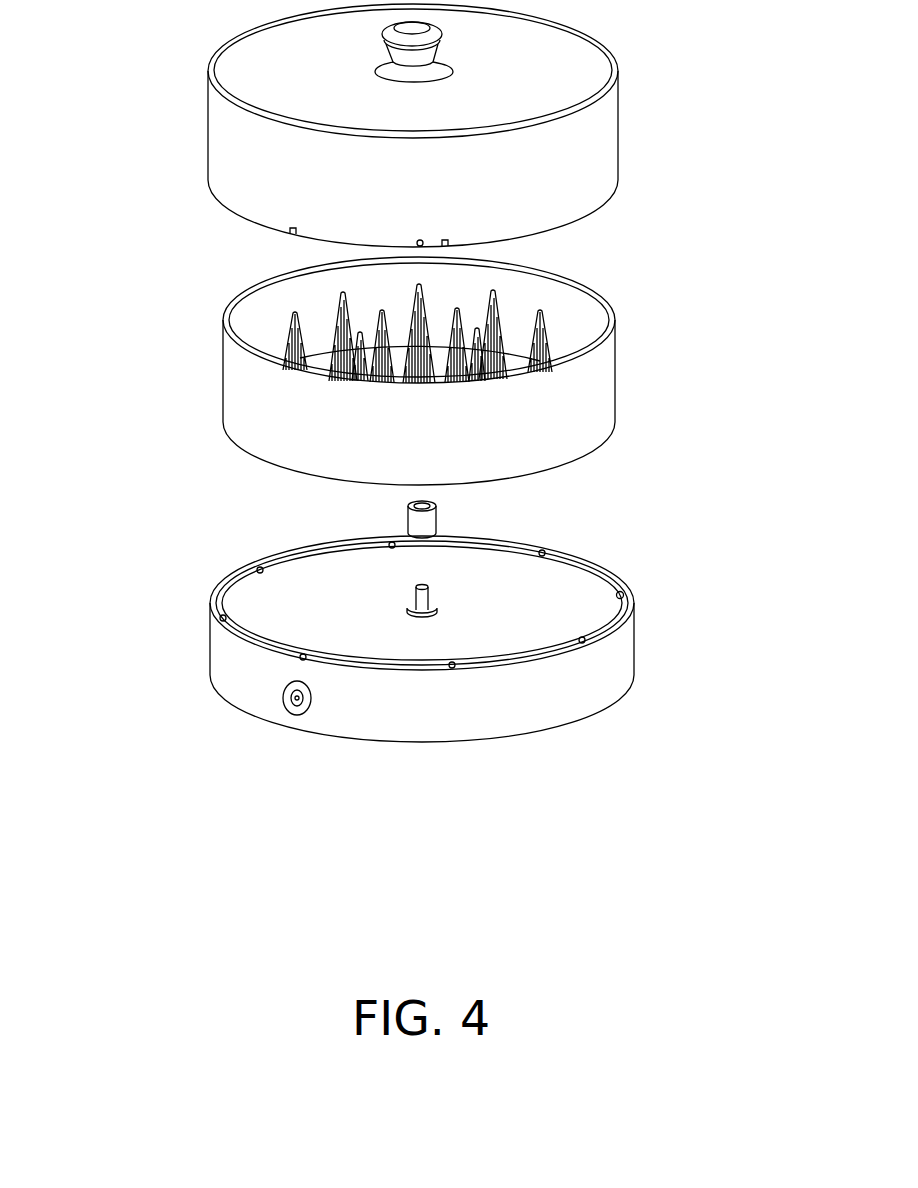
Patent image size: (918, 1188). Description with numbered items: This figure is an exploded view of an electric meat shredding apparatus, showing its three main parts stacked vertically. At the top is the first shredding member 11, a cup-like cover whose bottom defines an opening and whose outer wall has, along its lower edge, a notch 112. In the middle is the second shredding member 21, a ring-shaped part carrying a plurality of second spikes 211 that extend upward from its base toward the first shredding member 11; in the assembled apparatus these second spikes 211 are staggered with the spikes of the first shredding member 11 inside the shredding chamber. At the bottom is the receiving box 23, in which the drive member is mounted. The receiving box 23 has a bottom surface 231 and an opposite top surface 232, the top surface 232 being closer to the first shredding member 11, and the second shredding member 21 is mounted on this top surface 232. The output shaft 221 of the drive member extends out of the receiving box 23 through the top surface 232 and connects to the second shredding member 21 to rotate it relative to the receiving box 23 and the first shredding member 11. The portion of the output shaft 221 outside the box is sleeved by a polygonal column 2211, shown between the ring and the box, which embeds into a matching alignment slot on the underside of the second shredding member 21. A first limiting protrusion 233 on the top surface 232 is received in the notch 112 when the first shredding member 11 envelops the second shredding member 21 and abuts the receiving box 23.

The first shredding member 11 is at (605, 148).
The notch 112 is at (585, 210).
The second shredding member 21 is at (605, 385).
The second spikes 211 is at (545, 313).
The polygonal column 2211 is at (428, 519).
The output shaft 221 is at (430, 588).
The receiving box 23 is at (397, 669).
The bottom surface 231 is at (243, 727).
The top surface 232 is at (247, 531).
The first limiting protrusion 233 is at (630, 593).